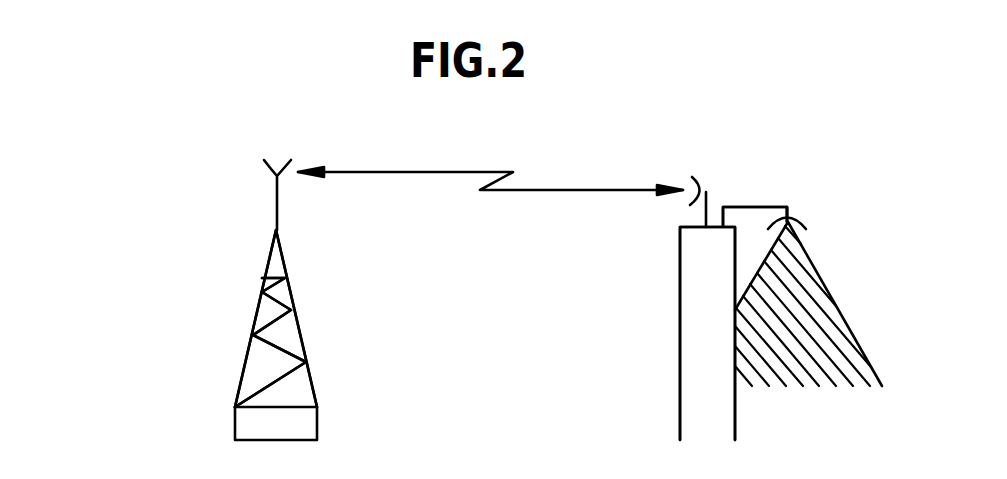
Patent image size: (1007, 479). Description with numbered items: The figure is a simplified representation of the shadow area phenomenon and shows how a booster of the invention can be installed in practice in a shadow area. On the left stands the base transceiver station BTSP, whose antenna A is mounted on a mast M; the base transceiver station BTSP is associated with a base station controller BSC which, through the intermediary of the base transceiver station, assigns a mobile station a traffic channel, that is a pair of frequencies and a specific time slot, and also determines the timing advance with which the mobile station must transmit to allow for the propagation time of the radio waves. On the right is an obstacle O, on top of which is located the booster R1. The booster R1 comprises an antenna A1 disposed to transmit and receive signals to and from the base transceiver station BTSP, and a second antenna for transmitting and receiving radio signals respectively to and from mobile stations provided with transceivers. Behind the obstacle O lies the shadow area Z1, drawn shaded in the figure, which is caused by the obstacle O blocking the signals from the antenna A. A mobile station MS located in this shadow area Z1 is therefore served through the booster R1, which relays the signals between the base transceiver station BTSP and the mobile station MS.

The base transceiver station BTSP is at (236, 300).
The antenna A is at (276, 190).
The mast M is at (287, 339).
The base station controller BSC is at (235, 413).
The booster R1 is at (780, 170).
The obstacle O is at (695, 323).
The antenna A1 is at (706, 192).
The shadow area Z1 is at (812, 306).
The mobile station MS is at (828, 368).